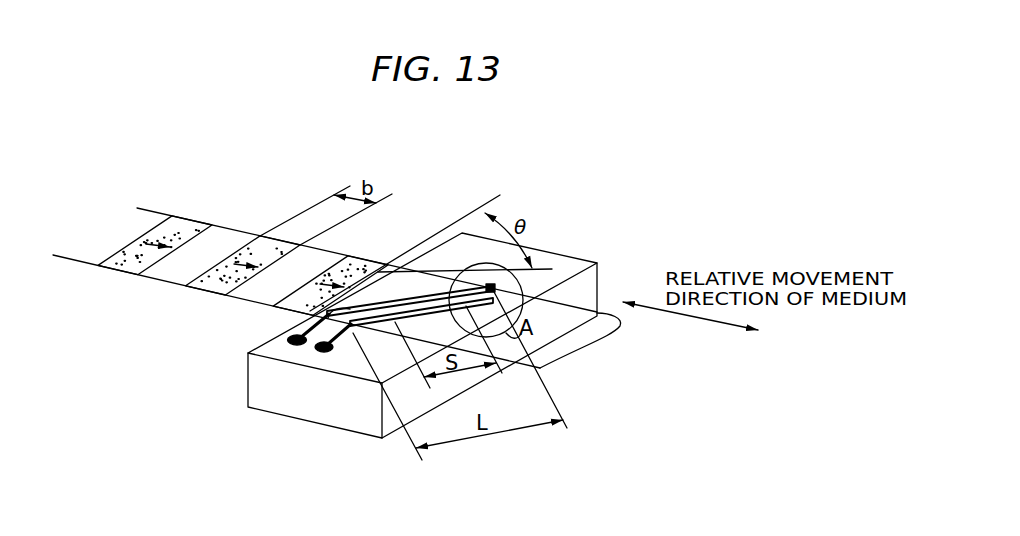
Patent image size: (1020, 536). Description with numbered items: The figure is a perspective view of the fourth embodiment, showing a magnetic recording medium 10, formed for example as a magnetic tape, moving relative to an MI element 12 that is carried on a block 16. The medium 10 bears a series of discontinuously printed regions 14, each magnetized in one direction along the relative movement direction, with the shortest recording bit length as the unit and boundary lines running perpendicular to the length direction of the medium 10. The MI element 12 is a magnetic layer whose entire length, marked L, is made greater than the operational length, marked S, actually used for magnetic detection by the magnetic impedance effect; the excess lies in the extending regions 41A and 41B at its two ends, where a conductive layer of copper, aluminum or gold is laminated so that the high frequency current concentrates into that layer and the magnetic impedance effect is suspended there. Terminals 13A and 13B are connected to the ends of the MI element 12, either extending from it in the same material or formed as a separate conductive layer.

The magnetic recording medium 10 is at (146, 210).
The discontinuously printed region 14 is at (191, 223).
The MI element 12 is at (431, 291).
The extending region 41A is at (486, 289).
The extending region 41B is at (328, 315).
The terminal 13A is at (258, 366).
The terminal 13B is at (323, 353).
The substrate 16 is at (288, 406).